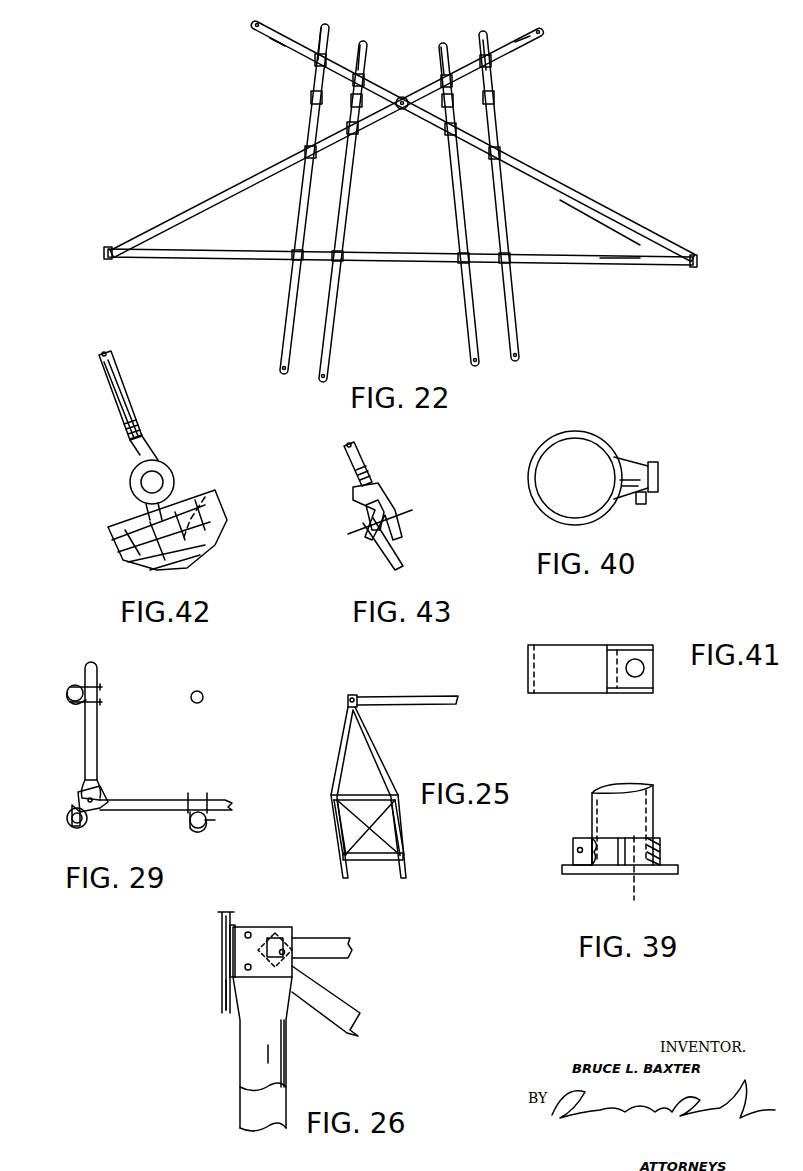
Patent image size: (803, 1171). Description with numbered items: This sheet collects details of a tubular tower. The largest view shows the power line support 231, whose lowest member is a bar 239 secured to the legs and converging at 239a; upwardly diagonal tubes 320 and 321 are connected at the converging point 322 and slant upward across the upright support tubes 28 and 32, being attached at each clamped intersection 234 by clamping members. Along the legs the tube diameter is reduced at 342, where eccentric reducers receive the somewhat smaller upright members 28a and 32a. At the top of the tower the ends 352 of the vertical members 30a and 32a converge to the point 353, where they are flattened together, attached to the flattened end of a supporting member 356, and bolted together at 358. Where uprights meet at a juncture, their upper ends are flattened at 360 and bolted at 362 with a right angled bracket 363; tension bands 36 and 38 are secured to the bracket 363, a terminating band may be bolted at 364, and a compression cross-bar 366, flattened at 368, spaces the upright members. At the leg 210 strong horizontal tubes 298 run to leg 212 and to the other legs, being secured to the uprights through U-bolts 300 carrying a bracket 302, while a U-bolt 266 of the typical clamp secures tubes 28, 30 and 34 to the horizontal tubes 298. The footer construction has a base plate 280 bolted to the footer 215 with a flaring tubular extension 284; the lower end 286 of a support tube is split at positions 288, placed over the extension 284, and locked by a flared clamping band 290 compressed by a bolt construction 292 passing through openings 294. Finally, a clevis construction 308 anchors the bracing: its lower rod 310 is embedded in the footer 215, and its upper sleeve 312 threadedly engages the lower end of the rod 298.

In FIG. 22, the support tube 28 is at (330, 350).
In FIG. 29, the support tube 28 is at (207, 820).
In FIG. 22, the support tube 32 is at (280, 342).
In FIG. 29, the support tube 32 is at (80, 827).
In FIG. 22, the upright member 28a is at (367, 53).
In FIG. 26, the upright member 28a is at (255, 1082).
In FIG. 22, the upright member 32a is at (323, 28).
In FIG. 25, the upright member 32a is at (398, 833).
In FIG. 26, the upright member 32a is at (255, 1108).
In FIG. 22, the diagonal tube 320 is at (207, 200).
In FIG. 22, the diagonal tube 321 is at (277, 40).
In FIG. 22, the converging point 322 is at (106, 256).
In FIG. 22, the diameter reduction 342 is at (311, 97).
In FIG. 22, the clamped intersection 234 is at (307, 153).
In FIG. 22, the bar 239 is at (420, 258).
In FIG. 22, the converging portion 239a is at (608, 262).
In FIG. 22, the power line support 231 is at (602, 238).
In FIG. 42, the horizontal tube 298 is at (125, 392).
In FIG. 43, the horizontal tube 298 is at (365, 462).
In FIG. 29, the horizontal tube 298 is at (96, 728).
In FIG. 42, the upper sleeve 312 is at (145, 442).
In FIG. 43, the upper sleeve 312 is at (380, 490).
In FIG. 42, the clevis construction 308 is at (183, 458).
In FIG. 42, the lower rod 310 is at (215, 482).
In FIG. 43, the lower rod 310 is at (395, 557).
In FIG. 42, the footer 215 is at (215, 507).
In FIG. 40, the clamping band 290 is at (600, 442).
In FIG. 41, the clamping band 290 is at (553, 645).
In FIG. 39, the clamping band 290 is at (660, 852).
In FIG. 40, the bolt construction 292 is at (653, 462).
In FIG. 39, the bolt construction 292 is at (578, 850).
In FIG. 41, the openings 294 is at (635, 667).
In FIG. 29, the support tube 30 is at (70, 690).
In FIG. 29, the support tube 34 is at (203, 690).
In FIG. 29, the U-bolt 266 is at (85, 705).
In FIG. 29, the leg 210 is at (115, 748).
In FIG. 29, the bracket 302 is at (103, 797).
In FIG. 29, the U-bolt 300 is at (88, 815).
In FIG. 25, the converging point 353 is at (355, 687).
In FIG. 25, the supporting member 356 is at (420, 700).
In FIG. 25, the bolt 358 is at (348, 700).
In FIG. 25, the ends of vertical supporting members 352 is at (380, 745).
In FIG. 25, the upright member 30a is at (332, 805).
In FIG. 25, the leg 212 is at (357, 833).
In FIG. 39, the base plate 280 is at (585, 875).
In FIG. 39, the lower end of support tube 286 is at (628, 828).
In FIG. 39, the split position 288 is at (620, 860).
In FIG. 39, the tubular extension 284 is at (637, 879).
In FIG. 26, the flattened upper end 360 is at (270, 998).
In FIG. 26, the tension band 38 is at (220, 927).
In FIG. 26, the tension band 36 is at (225, 1002).
In FIG. 26, the right angled bracket 363 is at (235, 927).
In FIG. 26, the bolt 362 is at (250, 933).
In FIG. 26, the bolt 364 is at (290, 940).
In FIG. 26, the flattened end 368 is at (305, 948).
In FIG. 26, the cross-bar 366 is at (327, 950).